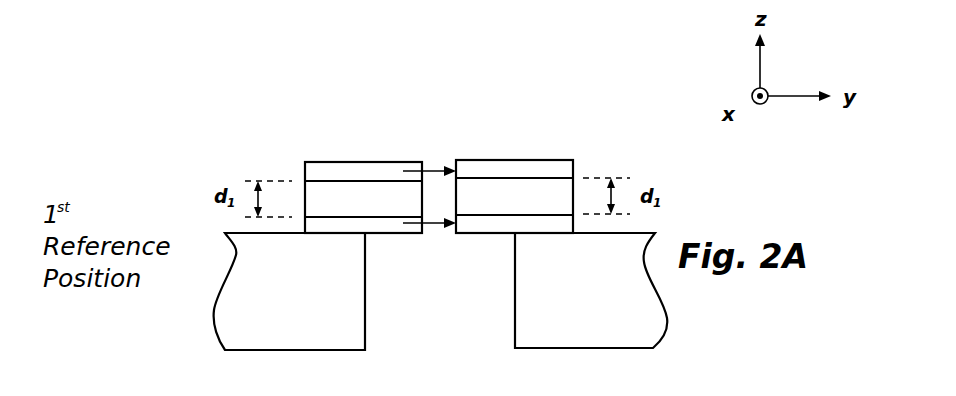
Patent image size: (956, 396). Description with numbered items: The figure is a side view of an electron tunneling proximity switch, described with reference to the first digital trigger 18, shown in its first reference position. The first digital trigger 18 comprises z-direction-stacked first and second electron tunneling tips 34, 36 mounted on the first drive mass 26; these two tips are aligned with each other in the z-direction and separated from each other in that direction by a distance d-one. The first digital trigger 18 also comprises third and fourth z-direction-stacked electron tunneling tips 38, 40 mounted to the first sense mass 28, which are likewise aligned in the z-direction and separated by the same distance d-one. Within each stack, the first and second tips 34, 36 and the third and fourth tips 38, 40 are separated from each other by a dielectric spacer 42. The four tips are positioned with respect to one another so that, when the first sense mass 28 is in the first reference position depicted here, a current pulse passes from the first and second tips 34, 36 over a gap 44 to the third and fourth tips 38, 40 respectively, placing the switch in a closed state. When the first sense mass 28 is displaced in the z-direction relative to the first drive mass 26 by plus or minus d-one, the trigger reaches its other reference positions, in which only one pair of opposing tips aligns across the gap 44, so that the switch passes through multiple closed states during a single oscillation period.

The first digital trigger 18 is at (160, 147).
The first drive mass 26 is at (596, 305).
The first sense mass 28 is at (302, 305).
The first electron tunneling tip 34 is at (505, 237).
The second electron tunneling tip 36 is at (498, 160).
The third electron tunneling tip 38 is at (383, 240).
The fourth electron tunneling tip 40 is at (340, 162).
The dielectric spacer 42 is at (373, 212).
The gap 44 is at (453, 153).